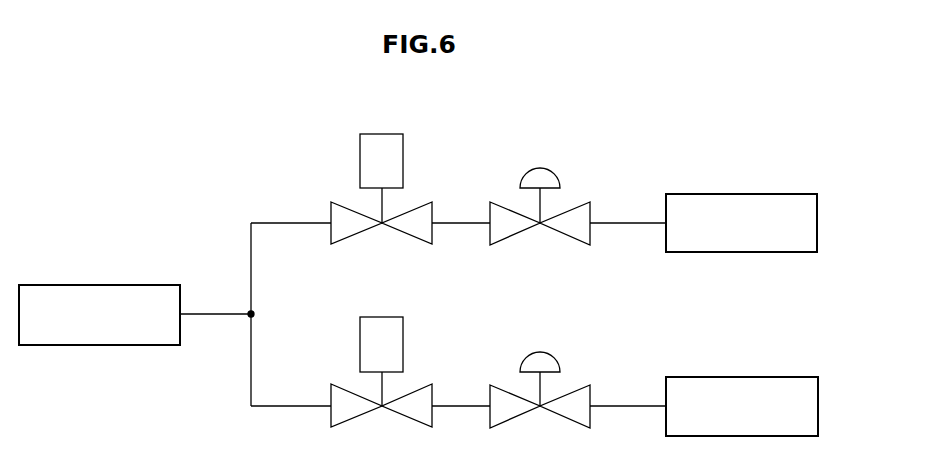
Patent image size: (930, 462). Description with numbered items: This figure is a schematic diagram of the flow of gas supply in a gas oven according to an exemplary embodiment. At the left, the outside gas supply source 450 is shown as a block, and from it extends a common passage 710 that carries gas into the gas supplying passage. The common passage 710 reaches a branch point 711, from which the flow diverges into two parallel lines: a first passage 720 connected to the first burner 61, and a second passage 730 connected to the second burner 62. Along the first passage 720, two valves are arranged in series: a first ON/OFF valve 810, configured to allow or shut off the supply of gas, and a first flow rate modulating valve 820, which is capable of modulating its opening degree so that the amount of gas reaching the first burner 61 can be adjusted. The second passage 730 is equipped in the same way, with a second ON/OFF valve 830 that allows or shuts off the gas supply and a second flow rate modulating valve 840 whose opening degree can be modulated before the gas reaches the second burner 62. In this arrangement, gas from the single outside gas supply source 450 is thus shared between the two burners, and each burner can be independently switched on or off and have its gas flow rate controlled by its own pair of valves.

The outside gas supply source 450 is at (109, 284).
The common passage 710 is at (212, 311).
The branch point / branch pipe 711 is at (249, 315).
The first passage 720 is at (459, 220).
The second passage 730 is at (459, 404).
The first ON/OFF valve 810 is at (381, 133).
The first flow rate modulating valve 820 is at (539, 168).
The second ON/OFF valve 830 is at (381, 316).
The second flow rate modulating valve 840 is at (539, 354).
The first burner 61 is at (735, 193).
The second burner 62 is at (735, 376).